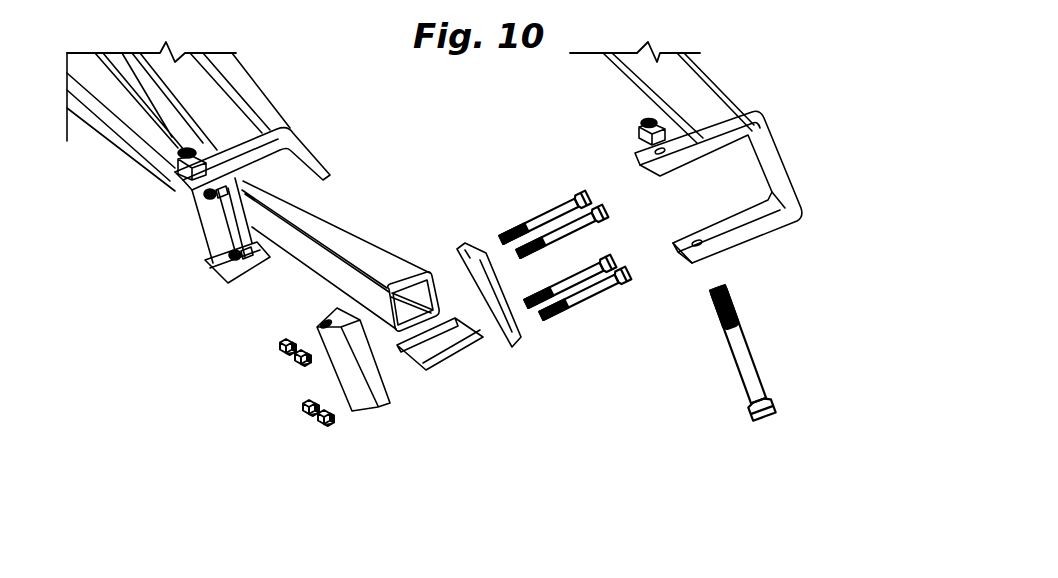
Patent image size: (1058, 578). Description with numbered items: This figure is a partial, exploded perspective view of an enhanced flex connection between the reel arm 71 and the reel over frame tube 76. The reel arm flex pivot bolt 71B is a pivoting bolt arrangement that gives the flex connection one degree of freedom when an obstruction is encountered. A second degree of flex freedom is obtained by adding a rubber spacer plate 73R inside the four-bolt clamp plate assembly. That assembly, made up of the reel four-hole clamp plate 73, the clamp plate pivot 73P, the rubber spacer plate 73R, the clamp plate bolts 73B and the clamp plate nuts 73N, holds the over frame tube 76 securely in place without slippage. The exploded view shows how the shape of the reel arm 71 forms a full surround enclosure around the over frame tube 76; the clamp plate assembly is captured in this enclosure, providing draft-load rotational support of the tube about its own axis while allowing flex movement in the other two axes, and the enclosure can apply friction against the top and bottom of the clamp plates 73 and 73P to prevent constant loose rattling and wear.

The reel arm 71 is at (237, 92).
The reel arm flex pivot bolt 71B is at (750, 338).
The reel over frame tube 76 is at (363, 227).
The reel 4-hole clamp plate 73 is at (520, 330).
The clamp plate pivot 73P is at (200, 228).
The rubber spacer plate 73R is at (257, 245).
The clamp plate nut 73N is at (283, 343).
The clamp plate bolt 73B is at (592, 295).